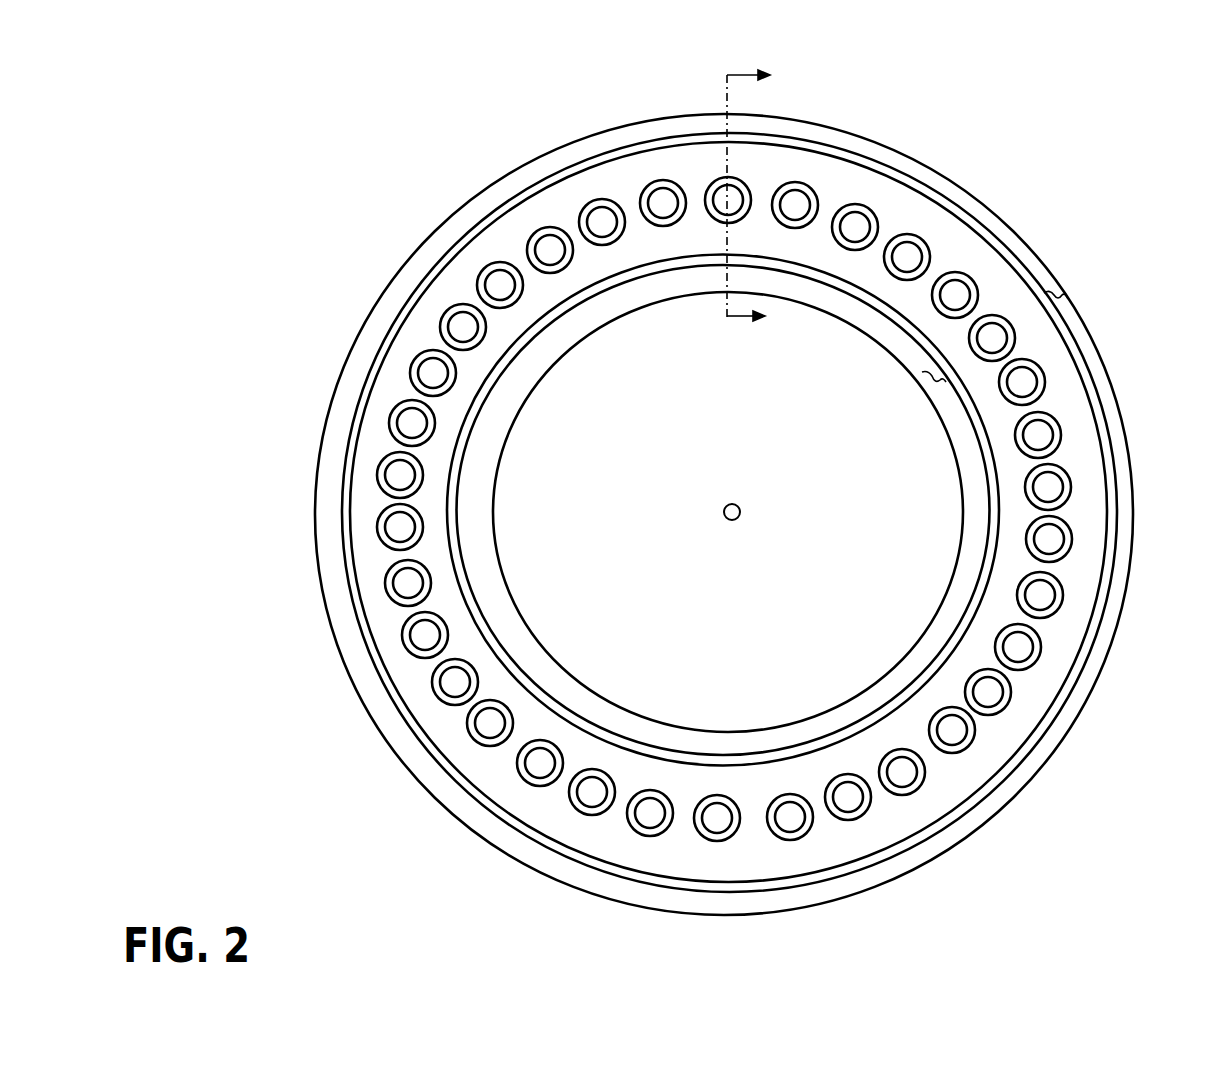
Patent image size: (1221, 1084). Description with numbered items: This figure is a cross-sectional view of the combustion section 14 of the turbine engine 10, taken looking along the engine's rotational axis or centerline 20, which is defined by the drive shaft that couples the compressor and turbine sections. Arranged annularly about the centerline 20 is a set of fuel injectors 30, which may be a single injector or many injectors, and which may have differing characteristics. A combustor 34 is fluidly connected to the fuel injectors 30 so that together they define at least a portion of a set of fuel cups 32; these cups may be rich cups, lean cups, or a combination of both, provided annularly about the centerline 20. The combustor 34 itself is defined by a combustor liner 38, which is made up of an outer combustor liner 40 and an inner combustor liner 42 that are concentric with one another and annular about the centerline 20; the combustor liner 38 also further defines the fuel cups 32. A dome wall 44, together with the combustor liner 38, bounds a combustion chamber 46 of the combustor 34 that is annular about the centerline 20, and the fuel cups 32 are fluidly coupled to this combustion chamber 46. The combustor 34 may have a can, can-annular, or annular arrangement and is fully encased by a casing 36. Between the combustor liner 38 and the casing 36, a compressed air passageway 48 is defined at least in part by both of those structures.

The turbine engine 10 is at (861, 104).
The combustion section 14 is at (286, 119).
The centerline 20 is at (727, 518).
The fuel injectors 30 is at (1047, 538).
The fuel cups 32 is at (726, 817).
The combustor 34 is at (1060, 422).
The casing 36 is at (960, 185).
The combustor liner 38 is at (1110, 455).
The outer combustor liner 40 is at (1103, 597).
The inner combustor liner 42 is at (468, 578).
The dome wall 44 is at (393, 393).
The combustion chamber 46 is at (468, 282).
The compressed air passageway 48 is at (938, 380).